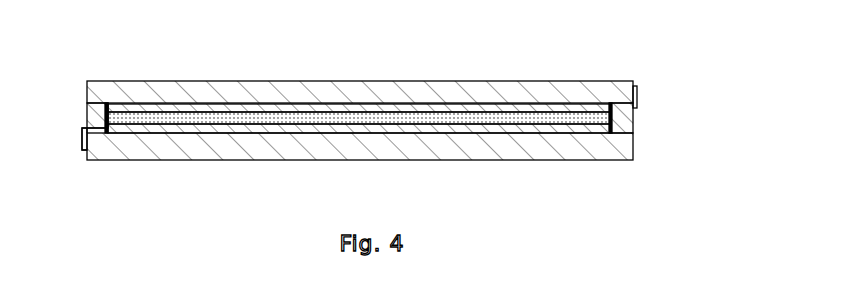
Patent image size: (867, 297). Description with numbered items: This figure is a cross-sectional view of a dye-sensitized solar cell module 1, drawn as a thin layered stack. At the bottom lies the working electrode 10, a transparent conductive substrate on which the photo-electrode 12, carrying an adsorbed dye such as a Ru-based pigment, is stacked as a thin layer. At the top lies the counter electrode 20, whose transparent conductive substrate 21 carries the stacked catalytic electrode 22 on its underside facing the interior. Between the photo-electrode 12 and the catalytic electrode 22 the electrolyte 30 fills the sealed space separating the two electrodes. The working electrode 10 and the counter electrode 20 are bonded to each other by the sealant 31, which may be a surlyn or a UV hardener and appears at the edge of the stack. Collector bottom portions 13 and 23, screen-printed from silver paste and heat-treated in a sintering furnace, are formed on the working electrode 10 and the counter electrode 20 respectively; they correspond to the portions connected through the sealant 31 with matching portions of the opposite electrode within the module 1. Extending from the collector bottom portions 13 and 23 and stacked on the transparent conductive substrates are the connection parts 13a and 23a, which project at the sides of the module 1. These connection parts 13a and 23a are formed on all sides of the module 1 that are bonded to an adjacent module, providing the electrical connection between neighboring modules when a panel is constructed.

The dye-sensitized solar cell module 1 is at (390, 109).
The working electrode 10 is at (533, 168).
The photo-electrode 12 is at (342, 130).
The bottom portion 13 is at (100, 167).
The connection part 13a is at (83, 146).
The counter electrode 20 is at (410, 74).
The transparent conductive substrate 21 is at (366, 95).
The catalytic electrode 22 is at (310, 112).
The bottom portion 23 is at (634, 124).
The connection part 23a is at (637, 103).
The electrolyte 30 is at (234, 122).
The sealant 31 is at (100, 116).